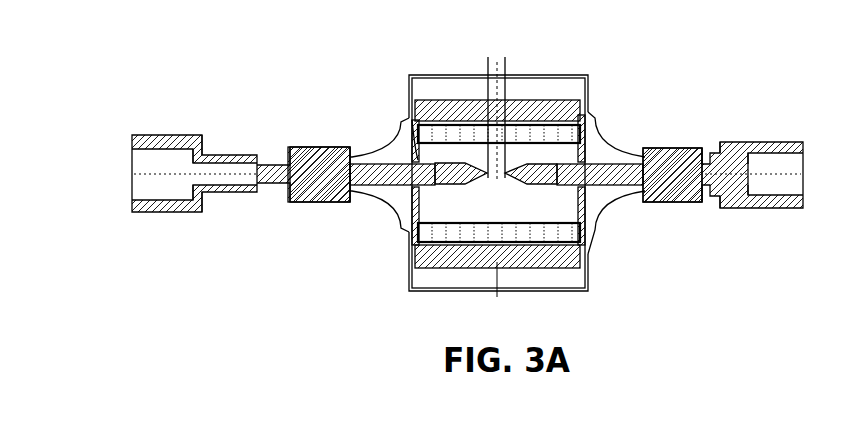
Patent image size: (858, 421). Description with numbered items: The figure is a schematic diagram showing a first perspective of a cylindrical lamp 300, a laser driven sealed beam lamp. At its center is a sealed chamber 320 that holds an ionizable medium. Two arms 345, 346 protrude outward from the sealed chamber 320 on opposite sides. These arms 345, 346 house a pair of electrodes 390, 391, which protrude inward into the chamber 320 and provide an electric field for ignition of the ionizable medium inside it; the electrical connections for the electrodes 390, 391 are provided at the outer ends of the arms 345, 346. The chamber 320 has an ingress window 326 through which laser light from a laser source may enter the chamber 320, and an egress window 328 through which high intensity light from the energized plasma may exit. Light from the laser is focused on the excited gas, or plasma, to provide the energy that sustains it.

The cylindrical lamp 300 is at (224, 57).
The sealed chamber 320 is at (622, 64).
The ingress window 326 is at (551, 279).
The egress window 328 is at (533, 82).
The arm 345 is at (242, 222).
The arm 346 is at (716, 232).
The electrode 390 is at (445, 186).
The electrode 391 is at (548, 186).